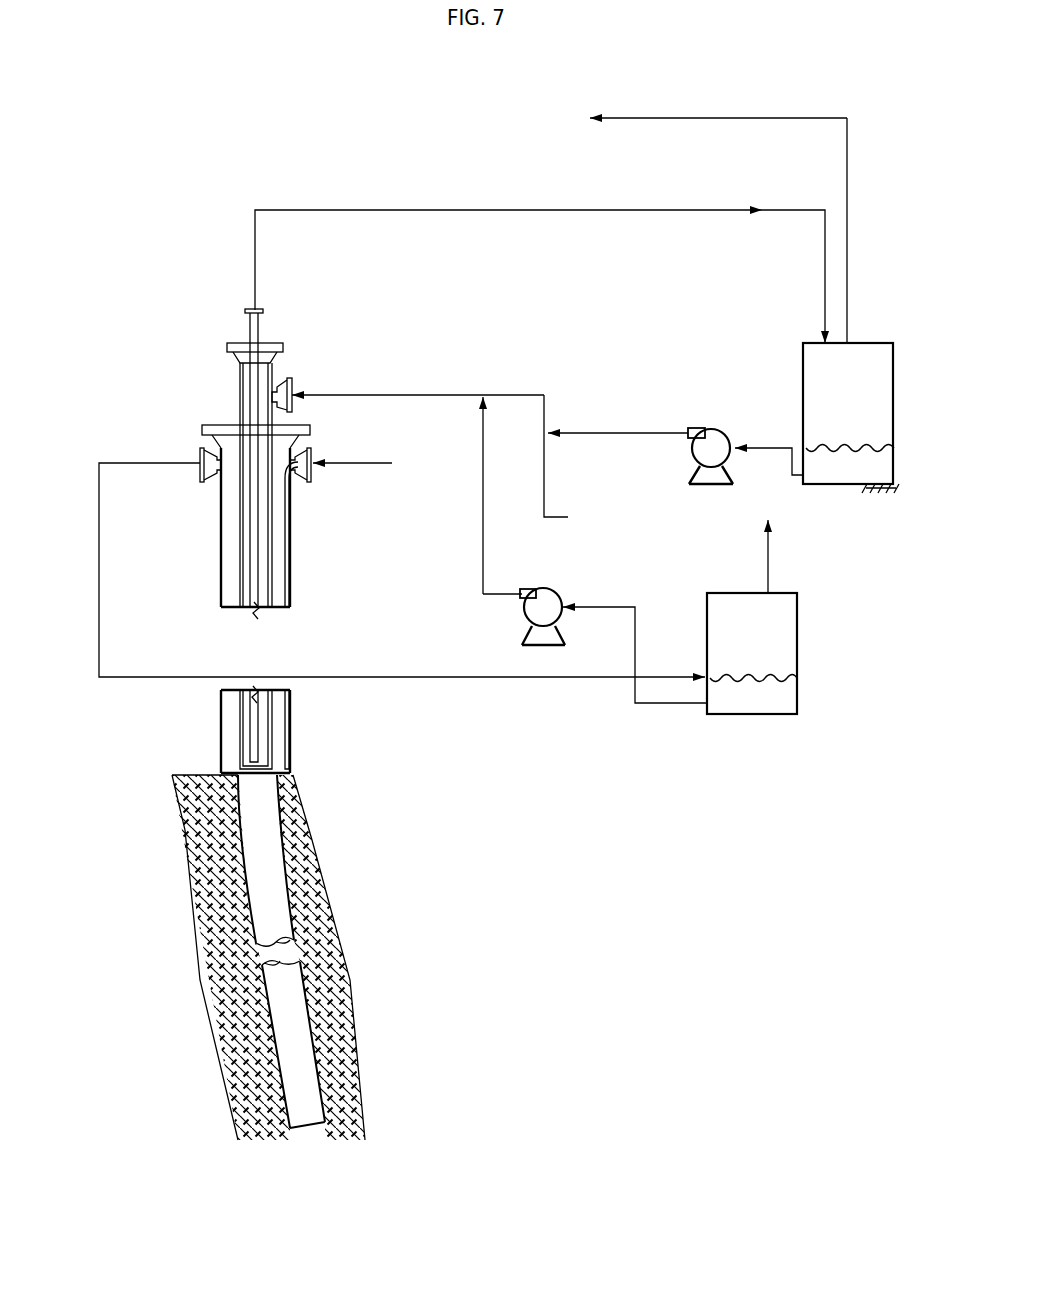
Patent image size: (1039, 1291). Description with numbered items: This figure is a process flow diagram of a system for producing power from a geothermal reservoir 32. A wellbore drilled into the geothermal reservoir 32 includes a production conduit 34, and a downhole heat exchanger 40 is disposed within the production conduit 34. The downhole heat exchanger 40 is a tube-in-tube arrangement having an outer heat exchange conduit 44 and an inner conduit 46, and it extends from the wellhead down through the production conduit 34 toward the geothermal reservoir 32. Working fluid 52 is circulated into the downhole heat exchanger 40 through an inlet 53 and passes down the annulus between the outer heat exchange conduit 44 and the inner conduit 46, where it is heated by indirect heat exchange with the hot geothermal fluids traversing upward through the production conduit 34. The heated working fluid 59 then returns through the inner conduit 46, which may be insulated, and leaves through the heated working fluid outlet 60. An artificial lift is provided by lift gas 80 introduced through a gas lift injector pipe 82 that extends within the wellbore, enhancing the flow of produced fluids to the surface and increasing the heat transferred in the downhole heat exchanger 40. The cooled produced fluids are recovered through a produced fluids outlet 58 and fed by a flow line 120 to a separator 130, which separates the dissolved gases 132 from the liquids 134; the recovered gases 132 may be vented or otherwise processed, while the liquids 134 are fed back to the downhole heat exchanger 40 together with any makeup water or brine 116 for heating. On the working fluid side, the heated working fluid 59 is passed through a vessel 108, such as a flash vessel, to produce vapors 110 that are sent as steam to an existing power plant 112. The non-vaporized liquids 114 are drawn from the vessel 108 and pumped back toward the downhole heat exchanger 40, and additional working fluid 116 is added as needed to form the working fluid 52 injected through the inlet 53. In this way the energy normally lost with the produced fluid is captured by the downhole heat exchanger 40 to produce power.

The geothermal reservoir 32 is at (327, 878).
The production conduit 34 is at (238, 850).
The downhole heat exchanger 40 is at (238, 338).
The outer heat exchange conduit 44 is at (240, 580).
The inner conduit 46 is at (247, 543).
The working fluid 52 is at (403, 395).
The inlet 53 is at (290, 378).
The produced fluids outlet 58 is at (200, 448).
The heated working fluid 59 is at (337, 210).
The heated working fluid outlet 60 is at (265, 303).
The lift gas 80 is at (318, 446).
The gas lift injector pipe 82 is at (287, 548).
The vessel 108 is at (851, 418).
The vapors 110 is at (848, 220).
The power plant 112 is at (718, 106).
The non-vaporized liquids 114 is at (675, 453).
The additional working fluid 116 is at (632, 486).
The flow line 120 is at (99, 565).
The separator 130 is at (797, 633).
The dissolved gases 132 is at (793, 556).
The liquids 134 is at (751, 735).